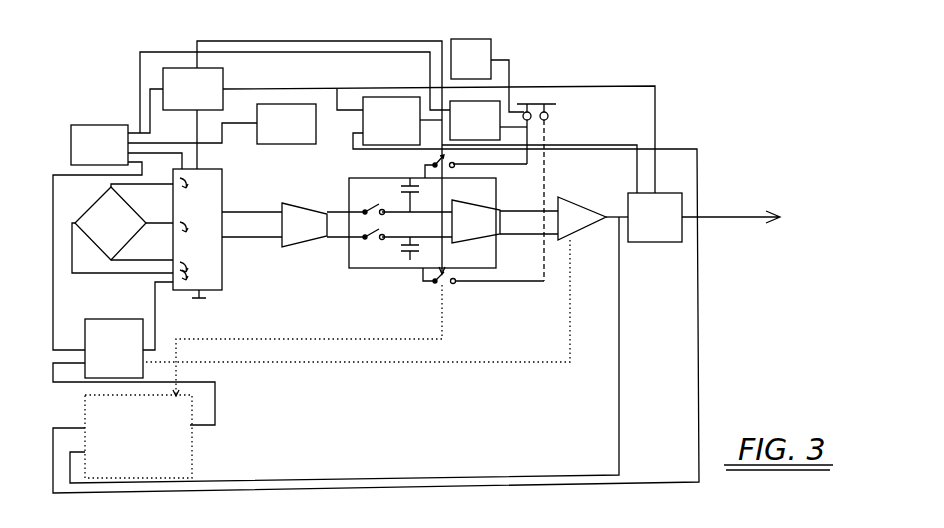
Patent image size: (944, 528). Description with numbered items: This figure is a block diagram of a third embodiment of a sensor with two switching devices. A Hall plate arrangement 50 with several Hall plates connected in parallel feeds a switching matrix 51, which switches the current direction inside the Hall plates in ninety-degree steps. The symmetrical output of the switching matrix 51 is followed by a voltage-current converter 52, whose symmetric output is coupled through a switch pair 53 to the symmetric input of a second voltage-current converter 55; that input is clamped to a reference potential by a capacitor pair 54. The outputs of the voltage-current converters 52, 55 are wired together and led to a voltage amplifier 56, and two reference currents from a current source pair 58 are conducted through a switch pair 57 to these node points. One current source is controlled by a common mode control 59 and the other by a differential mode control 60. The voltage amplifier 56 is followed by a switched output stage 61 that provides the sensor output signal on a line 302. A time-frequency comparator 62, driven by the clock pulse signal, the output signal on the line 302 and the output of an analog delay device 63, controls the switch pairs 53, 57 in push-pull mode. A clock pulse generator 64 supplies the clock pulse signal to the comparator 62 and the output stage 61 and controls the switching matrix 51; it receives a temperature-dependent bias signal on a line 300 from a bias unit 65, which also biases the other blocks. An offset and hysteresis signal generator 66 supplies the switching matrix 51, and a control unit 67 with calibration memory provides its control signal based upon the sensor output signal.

The Hall plate arrangement 50 is at (122, 228).
The switching matrix 51 is at (224, 192).
The voltage-current converter 52 is at (274, 225).
The switch pair 53 is at (389, 222).
The capacitor pair 54 is at (422, 223).
The voltage-current converter 55 is at (505, 221).
The voltage amplifier 56 is at (349, 340).
The switch pair 57 is at (358, 218).
The current source pair 58 is at (550, 192).
The common mode control 59 is at (487, 75).
The differential mode control 60 is at (539, 147).
The switched output stage 61 is at (655, 217).
The time-frequency comparator 62 is at (376, 295).
The analog delay device 63 is at (222, 124).
The clock pulse generator 64 is at (391, 130).
The bias unit 65 is at (117, 237).
The offset and hysteresis signal generator 66 is at (134, 372).
The control unit 67 is at (138, 436).
The control line 300 is at (145, 128).
The line 302 is at (726, 225).